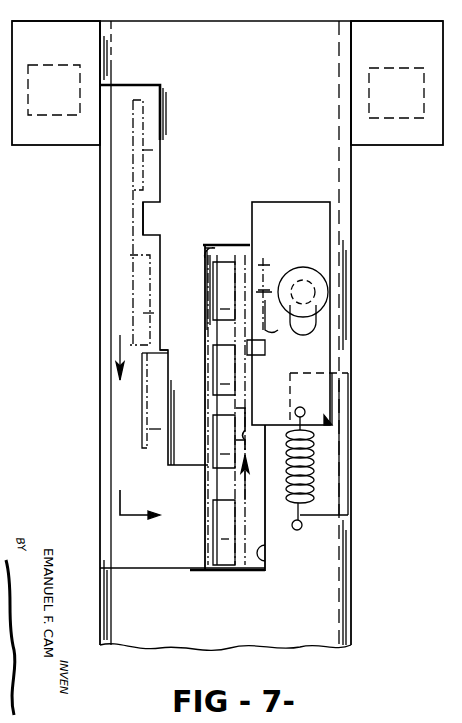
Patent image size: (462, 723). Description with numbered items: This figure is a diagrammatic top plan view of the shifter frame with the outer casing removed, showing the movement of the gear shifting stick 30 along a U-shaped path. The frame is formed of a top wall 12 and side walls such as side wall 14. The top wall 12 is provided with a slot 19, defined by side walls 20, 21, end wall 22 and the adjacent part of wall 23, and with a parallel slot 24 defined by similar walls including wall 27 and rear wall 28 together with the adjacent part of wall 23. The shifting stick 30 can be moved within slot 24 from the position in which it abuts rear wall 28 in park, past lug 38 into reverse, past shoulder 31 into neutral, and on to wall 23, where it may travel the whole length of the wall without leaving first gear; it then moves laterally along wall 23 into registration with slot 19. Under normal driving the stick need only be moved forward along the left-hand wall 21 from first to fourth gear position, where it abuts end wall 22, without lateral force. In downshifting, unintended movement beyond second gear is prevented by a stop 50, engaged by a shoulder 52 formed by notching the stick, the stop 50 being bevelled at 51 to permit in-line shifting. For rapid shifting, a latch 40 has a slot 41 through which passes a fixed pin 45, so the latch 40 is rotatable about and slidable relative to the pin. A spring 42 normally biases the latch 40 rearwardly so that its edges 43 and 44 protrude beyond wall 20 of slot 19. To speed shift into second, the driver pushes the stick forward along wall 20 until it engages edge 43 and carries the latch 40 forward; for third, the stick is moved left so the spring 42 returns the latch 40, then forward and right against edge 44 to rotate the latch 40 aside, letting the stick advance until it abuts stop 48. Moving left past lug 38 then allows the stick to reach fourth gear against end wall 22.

The top wall 12 is at (257, 629).
The side wall 14 is at (340, 495).
The slot 19 is at (258, 339).
The side wall 20 is at (266, 563).
The side wall 21 is at (218, 245).
The end wall 22 is at (238, 245).
The wall 23 is at (148, 568).
The slot 24 is at (137, 464).
The wall 27 is at (111, 399).
The rear wall 28 is at (148, 85).
The gear shifting stick 30 is at (152, 345).
The shoulder 31 is at (165, 352).
The lug 38 is at (150, 220).
The latch 40 is at (332, 390).
The slot 41 is at (310, 325).
The spring 42 is at (312, 460).
The edge 43 is at (333, 423).
The edge 44 is at (255, 400).
The fixed pin 45 is at (310, 290).
The stop 48 is at (270, 328).
The stop 50 is at (232, 425).
The bevel 51 is at (235, 445).
The shoulder 52 is at (140, 327).